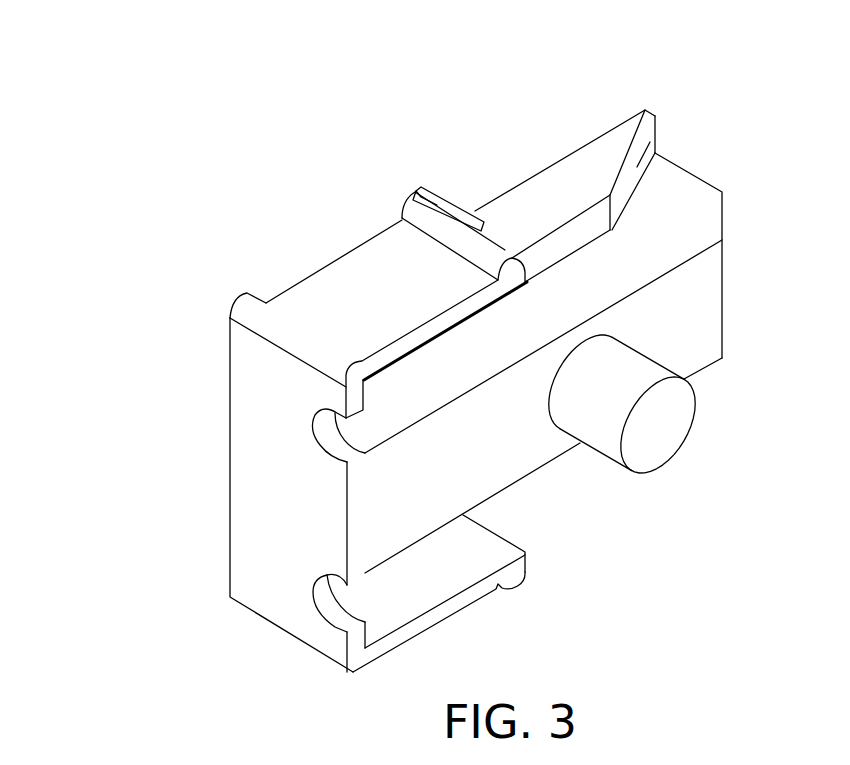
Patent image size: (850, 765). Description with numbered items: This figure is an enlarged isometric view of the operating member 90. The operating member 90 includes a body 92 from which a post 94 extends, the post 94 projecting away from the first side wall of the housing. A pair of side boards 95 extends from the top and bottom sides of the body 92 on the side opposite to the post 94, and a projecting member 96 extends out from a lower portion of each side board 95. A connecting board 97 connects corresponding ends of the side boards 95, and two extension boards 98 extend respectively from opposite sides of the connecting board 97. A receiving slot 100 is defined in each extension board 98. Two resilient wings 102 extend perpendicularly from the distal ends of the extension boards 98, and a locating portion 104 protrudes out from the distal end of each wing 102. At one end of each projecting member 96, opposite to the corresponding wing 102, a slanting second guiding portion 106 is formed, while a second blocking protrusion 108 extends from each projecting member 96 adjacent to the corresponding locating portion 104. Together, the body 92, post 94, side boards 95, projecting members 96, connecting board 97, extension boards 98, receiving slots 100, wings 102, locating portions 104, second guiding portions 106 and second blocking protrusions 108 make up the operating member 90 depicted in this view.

The operating member 90 is at (468, 36).
The body 92 is at (520, 455).
The post 94 is at (652, 432).
The side board 95 is at (684, 233).
The projecting member 96 is at (572, 188).
The connecting board 97 is at (258, 500).
The extension board 98 is at (252, 369).
The receiving slot 100 is at (323, 432).
The resilient wing 102 is at (337, 280).
The locating portion 104 is at (418, 217).
The second guiding portion 106 is at (657, 134).
The second blocking protrusion 108 is at (448, 208).